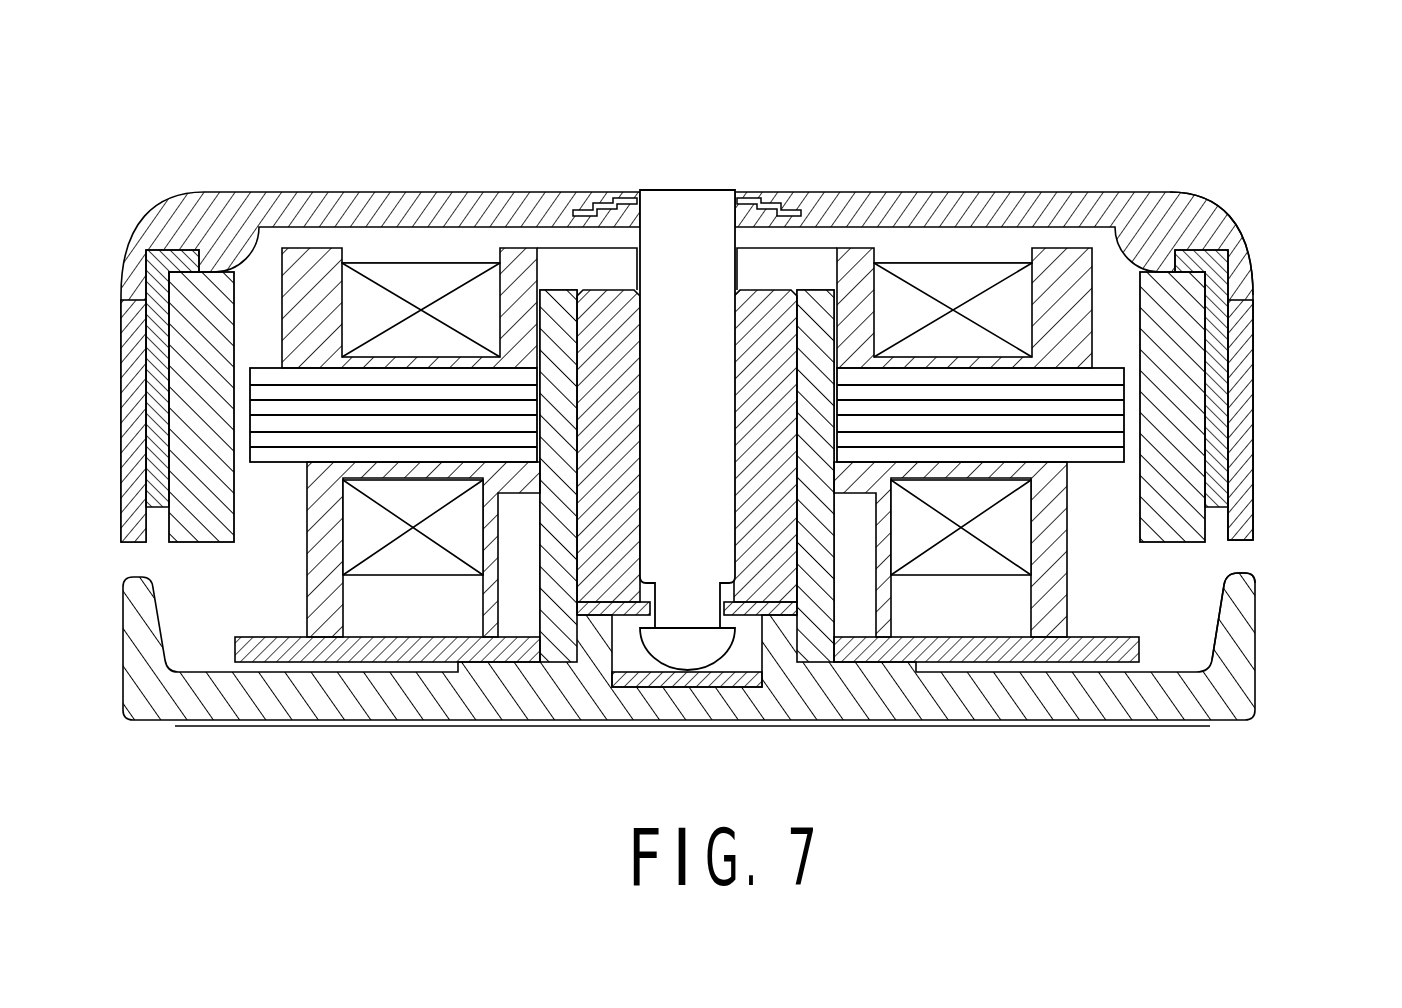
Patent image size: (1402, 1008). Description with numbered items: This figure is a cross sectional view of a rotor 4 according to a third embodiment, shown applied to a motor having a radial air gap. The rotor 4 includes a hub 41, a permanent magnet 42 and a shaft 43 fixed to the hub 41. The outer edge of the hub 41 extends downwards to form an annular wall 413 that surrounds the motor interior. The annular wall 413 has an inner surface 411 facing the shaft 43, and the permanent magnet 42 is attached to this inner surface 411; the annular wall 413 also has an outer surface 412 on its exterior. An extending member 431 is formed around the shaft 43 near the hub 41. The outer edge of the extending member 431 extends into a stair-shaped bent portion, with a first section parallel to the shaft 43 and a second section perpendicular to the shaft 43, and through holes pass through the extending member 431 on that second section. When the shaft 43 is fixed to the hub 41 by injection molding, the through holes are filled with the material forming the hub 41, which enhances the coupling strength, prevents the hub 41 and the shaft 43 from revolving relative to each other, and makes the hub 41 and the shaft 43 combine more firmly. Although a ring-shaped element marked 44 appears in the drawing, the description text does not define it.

The rotor 4 is at (947, 175).
The hub 41 is at (1067, 191).
The inner surface 411 is at (1218, 543).
The outer surface 412 is at (1255, 302).
The annular wall 413 is at (1250, 465).
The permanent magnet 42 is at (1175, 373).
The shaft 43 is at (702, 532).
The extending member 431 is at (750, 193).
The ring yoke 44 is at (1222, 250).